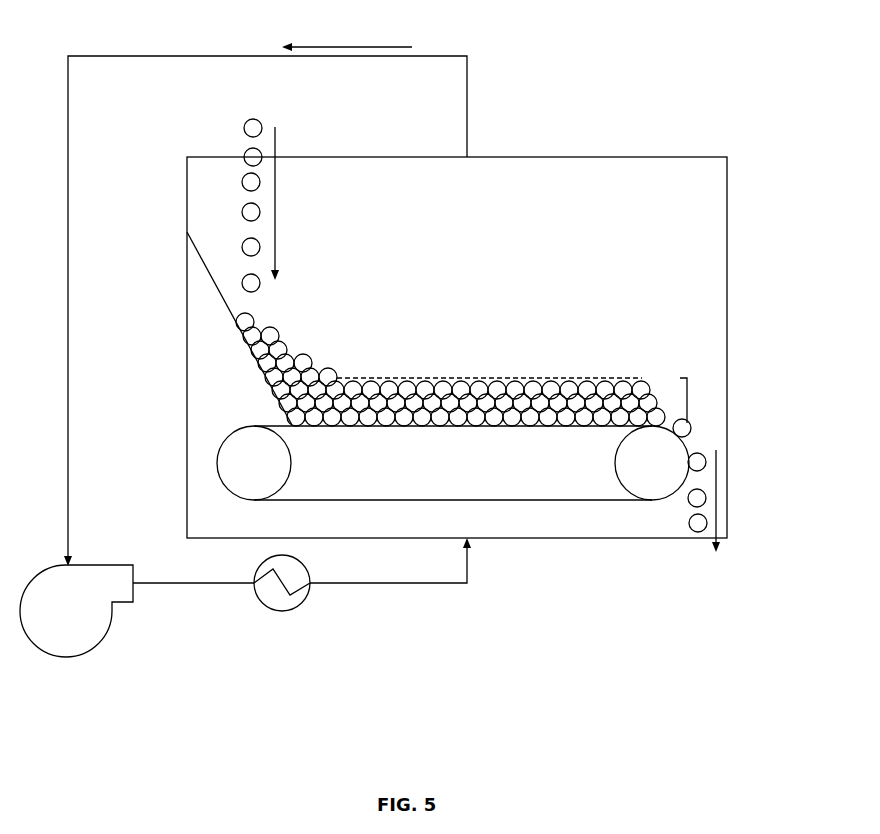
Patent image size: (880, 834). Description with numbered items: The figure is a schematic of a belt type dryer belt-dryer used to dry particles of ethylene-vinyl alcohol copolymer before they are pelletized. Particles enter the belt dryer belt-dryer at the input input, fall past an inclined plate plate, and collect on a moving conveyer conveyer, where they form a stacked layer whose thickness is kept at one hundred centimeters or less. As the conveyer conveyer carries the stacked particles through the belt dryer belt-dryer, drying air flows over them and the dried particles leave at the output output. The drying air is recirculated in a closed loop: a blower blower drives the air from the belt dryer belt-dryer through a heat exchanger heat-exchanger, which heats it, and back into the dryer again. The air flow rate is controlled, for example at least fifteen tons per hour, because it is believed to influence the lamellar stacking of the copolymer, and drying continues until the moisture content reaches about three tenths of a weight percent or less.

The belt type dryer belt-dryer is at (457, 347).
The element input is at (277, 205).
The element plate is at (207, 300).
The element conveyer is at (453, 463).
The element output is at (716, 501).
The heat exchanger heat-exchanger is at (290, 602).
The element blower is at (76, 627).